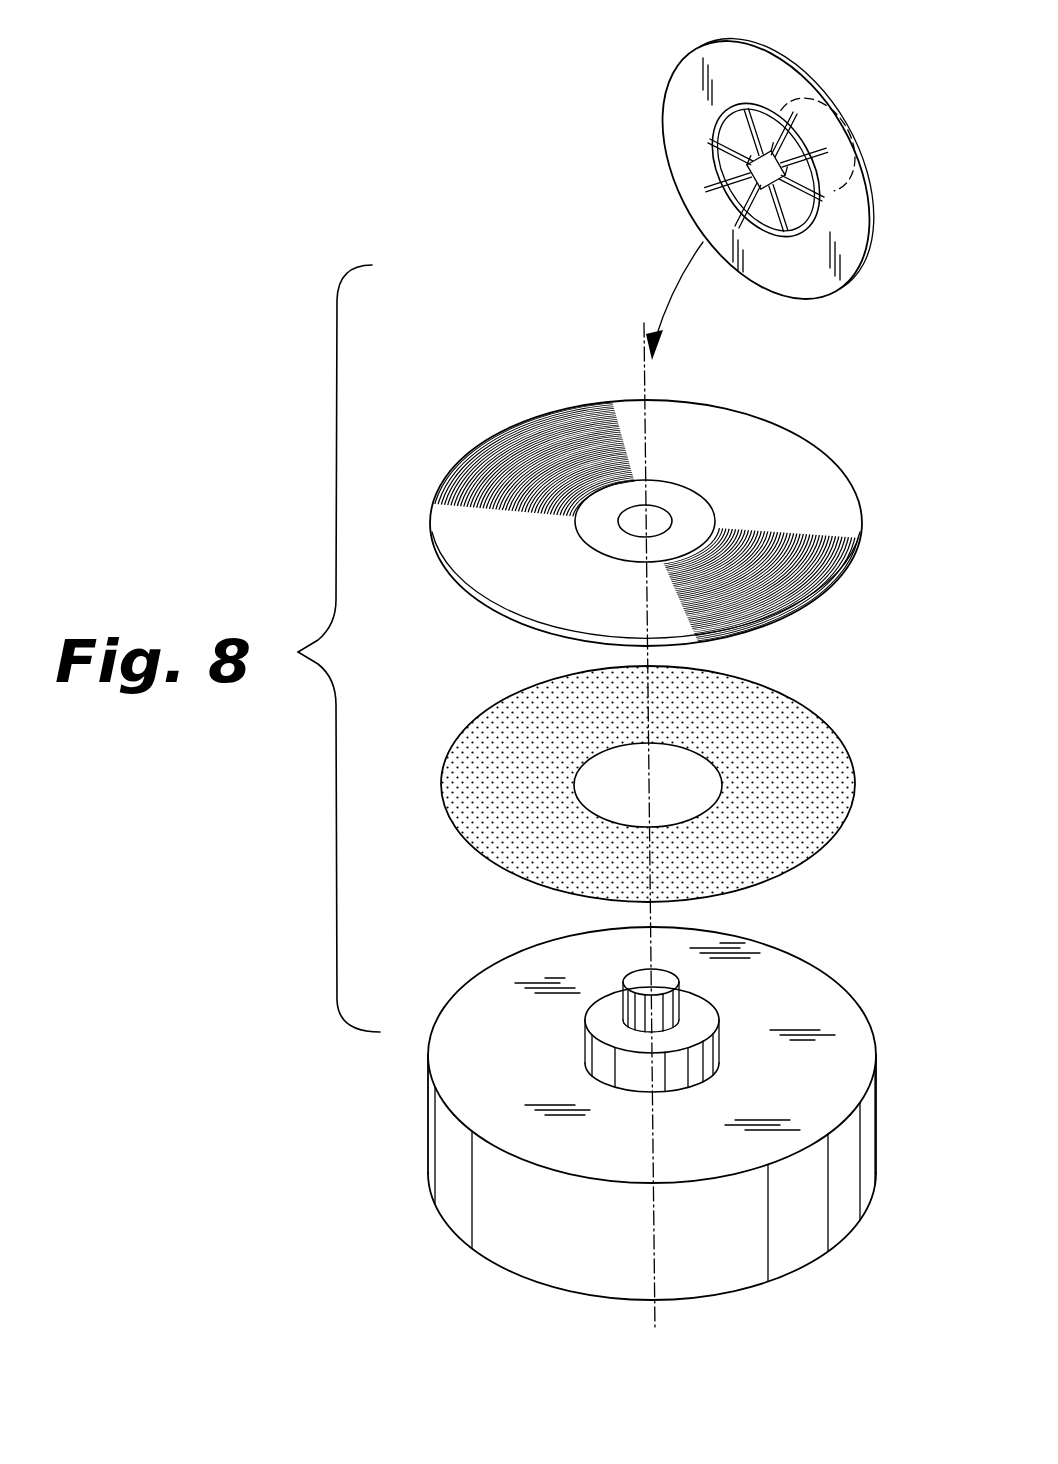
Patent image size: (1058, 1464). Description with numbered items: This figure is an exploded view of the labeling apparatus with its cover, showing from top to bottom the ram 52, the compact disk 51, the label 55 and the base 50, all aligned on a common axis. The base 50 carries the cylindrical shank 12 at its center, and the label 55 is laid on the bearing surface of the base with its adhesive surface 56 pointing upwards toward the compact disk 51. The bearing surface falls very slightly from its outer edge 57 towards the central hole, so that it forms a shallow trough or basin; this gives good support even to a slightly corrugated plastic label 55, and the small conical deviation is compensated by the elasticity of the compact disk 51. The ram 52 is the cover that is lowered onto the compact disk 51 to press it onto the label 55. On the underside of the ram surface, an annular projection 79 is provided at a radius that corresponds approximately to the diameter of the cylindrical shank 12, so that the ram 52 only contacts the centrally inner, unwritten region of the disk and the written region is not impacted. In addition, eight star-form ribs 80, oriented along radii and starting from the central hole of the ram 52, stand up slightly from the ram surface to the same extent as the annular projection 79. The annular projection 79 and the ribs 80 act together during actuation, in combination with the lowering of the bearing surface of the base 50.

The cylindrical shank 12 is at (667, 983).
The base 50 is at (604, 1123).
The compact disk 51 is at (483, 553).
The ram 52 is at (770, 167).
The label 55 is at (677, 803).
The adhesive surface 56 is at (805, 823).
The outer edge 57 is at (428, 1057).
The annular projection 79 is at (856, 114).
The star-form ribs 80 is at (766, 170).